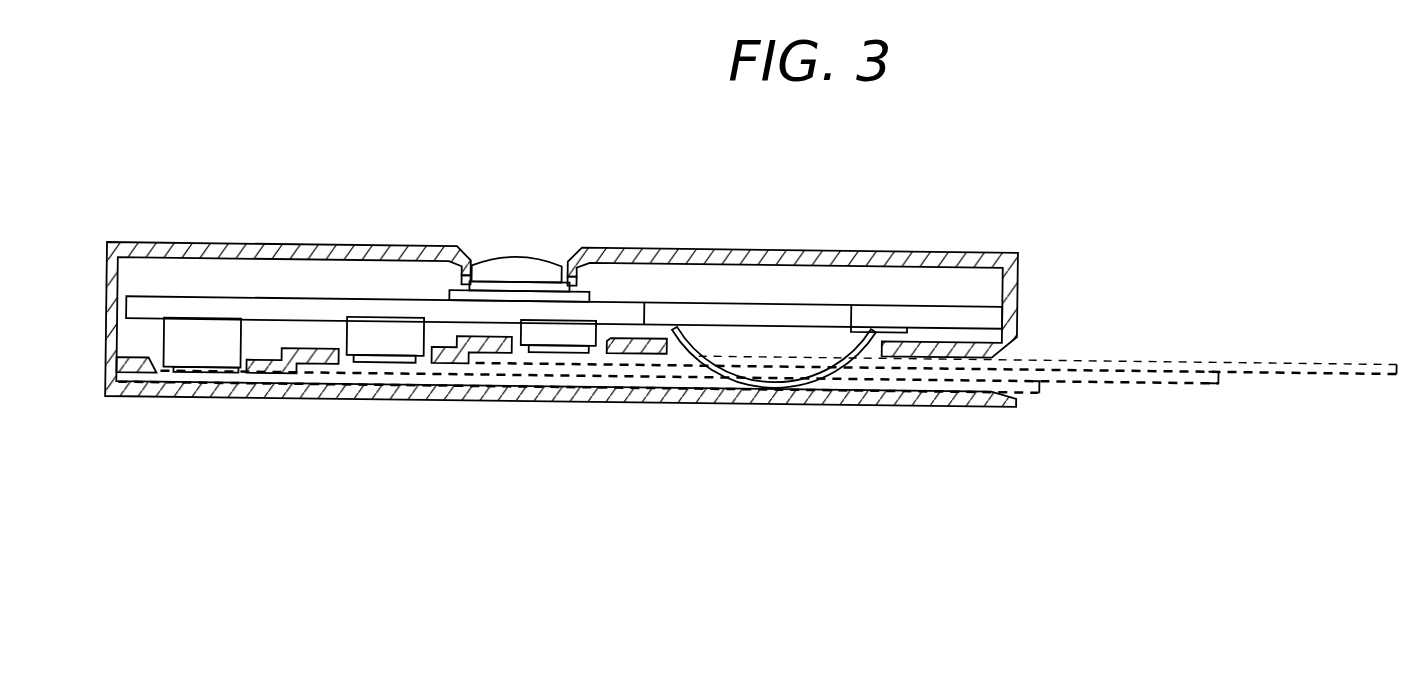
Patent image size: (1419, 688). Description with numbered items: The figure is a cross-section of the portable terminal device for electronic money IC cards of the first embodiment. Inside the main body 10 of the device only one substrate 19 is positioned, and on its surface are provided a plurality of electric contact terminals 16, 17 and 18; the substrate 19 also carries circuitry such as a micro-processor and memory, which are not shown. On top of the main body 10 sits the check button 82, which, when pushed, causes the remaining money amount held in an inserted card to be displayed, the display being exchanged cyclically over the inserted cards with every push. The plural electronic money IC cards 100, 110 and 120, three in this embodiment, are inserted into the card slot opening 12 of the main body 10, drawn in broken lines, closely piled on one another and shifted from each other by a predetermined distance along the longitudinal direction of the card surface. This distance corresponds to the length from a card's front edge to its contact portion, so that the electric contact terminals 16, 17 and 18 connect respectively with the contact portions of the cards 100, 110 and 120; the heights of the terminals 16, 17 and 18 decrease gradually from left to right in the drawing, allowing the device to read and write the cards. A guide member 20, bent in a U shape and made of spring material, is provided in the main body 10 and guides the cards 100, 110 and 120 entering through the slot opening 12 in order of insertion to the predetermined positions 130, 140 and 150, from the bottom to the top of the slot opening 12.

The main body 10 is at (282, 248).
The card slot opening 12 is at (1012, 343).
The electric contact terminal 16 is at (203, 371).
The electric contact terminal 17 is at (387, 360).
The electric contact terminal 18 is at (558, 352).
The substrate 19 is at (618, 305).
The guide member 20 is at (792, 385).
The check button 82 is at (521, 256).
The electronic money IC card 100 is at (1340, 361).
The electronic money IC card 110 is at (1157, 384).
The electronic money IC card 120 is at (1030, 390).
The predetermined position 130 is at (133, 380).
The predetermined position 140 is at (314, 371).
The predetermined position 150 is at (488, 357).